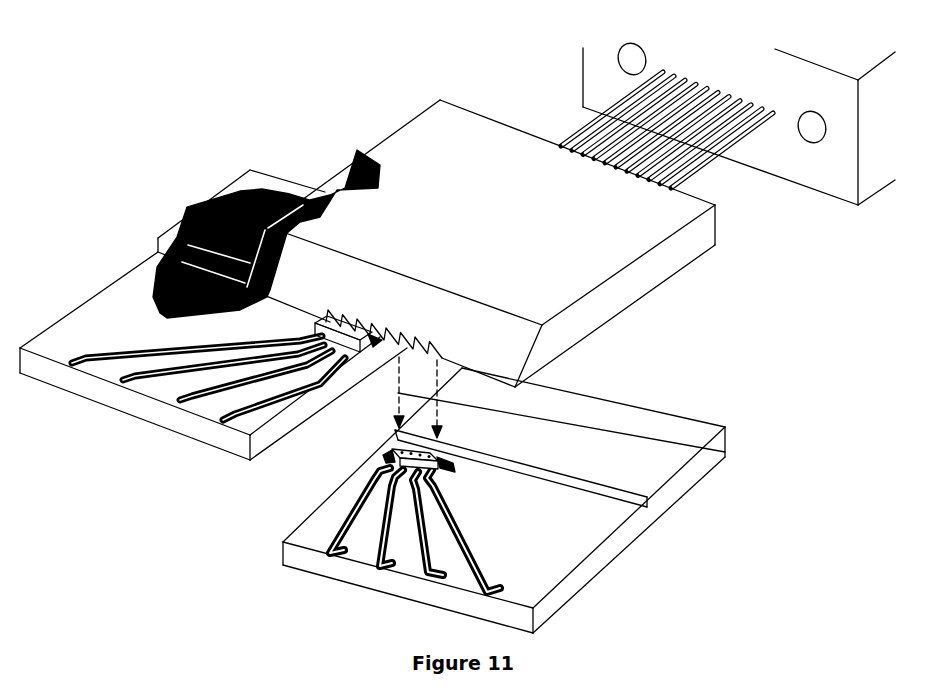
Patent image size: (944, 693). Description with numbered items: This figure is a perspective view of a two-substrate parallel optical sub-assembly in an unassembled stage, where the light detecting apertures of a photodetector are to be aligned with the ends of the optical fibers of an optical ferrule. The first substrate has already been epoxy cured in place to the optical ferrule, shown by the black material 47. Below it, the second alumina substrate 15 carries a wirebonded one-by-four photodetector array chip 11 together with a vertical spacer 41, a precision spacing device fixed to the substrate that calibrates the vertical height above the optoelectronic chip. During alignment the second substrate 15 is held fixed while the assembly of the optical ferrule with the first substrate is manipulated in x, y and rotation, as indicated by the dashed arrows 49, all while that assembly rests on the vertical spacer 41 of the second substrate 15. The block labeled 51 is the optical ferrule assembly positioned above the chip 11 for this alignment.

The photodetector array chip 11 is at (388, 456).
The second alumina substrate 15 is at (567, 587).
The vertical spacer 41 is at (665, 482).
The black material 47 is at (340, 178).
The dashed arrows 49 is at (690, 451).
The optical connector block 51 is at (523, 383).